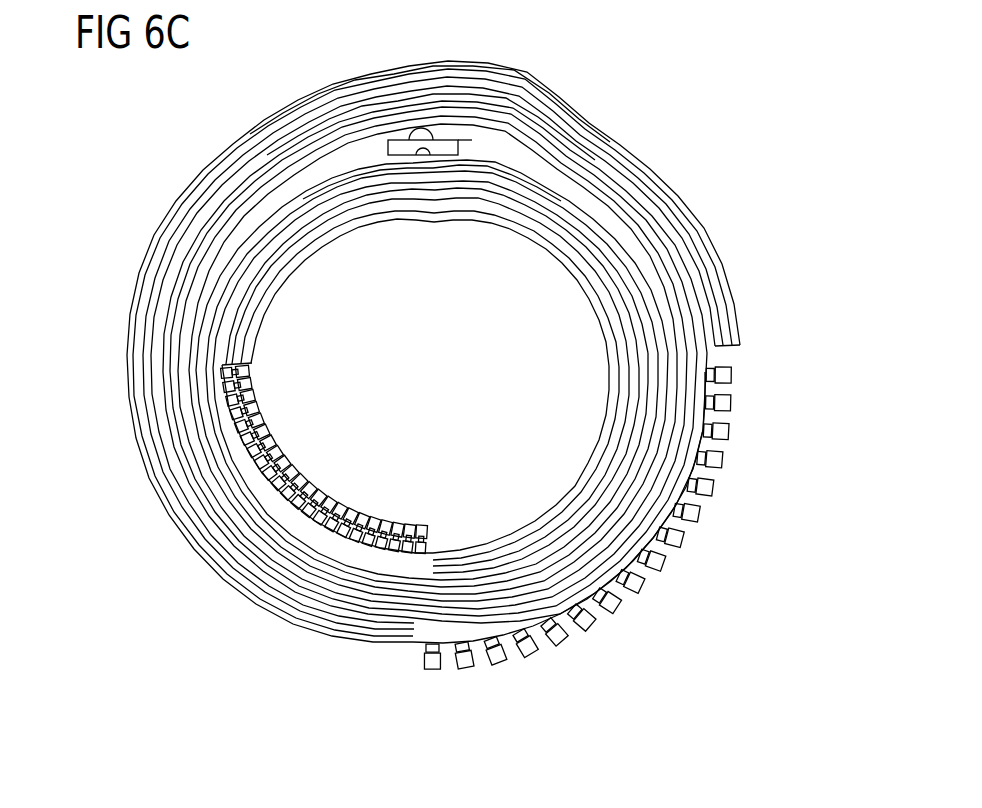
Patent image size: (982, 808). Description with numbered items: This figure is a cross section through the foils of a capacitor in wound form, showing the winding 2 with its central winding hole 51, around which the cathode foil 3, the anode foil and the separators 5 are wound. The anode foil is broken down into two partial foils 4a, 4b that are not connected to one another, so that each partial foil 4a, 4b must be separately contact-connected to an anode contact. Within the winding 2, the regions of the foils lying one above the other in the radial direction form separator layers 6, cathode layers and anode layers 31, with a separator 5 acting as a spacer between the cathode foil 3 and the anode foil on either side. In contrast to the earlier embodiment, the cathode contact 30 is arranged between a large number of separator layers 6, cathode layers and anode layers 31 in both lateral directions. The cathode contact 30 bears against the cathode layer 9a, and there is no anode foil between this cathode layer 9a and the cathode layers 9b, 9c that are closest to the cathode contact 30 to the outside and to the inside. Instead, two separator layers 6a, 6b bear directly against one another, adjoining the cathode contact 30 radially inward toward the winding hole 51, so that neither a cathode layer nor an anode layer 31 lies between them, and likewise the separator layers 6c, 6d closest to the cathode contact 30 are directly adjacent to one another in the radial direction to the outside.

The winding 2 is at (693, 152).
The cathode foil 3 is at (472, 140).
The partial foil 4a is at (212, 352).
The partial foil 4b is at (592, 191).
The separator 5 is at (307, 167).
The separator layer 6 is at (263, 183).
The separator layer 6a is at (480, 163).
The separator layer 6b is at (440, 170).
The separator layer 6c is at (502, 153).
The separator layer 6d is at (545, 160).
The cathode layer 9a is at (400, 136).
The cathode layer 9b is at (390, 173).
The cathode layer 9c is at (424, 128).
The cathode contact 30 is at (430, 137).
The anode layer 31 is at (272, 230).
The winding hole 51 is at (330, 445).